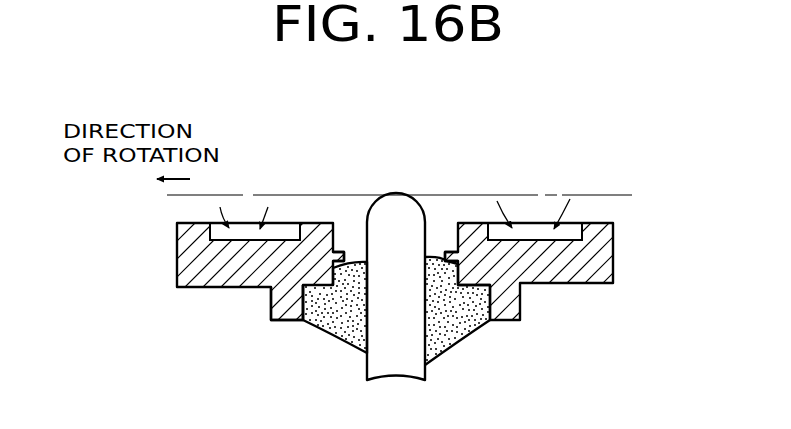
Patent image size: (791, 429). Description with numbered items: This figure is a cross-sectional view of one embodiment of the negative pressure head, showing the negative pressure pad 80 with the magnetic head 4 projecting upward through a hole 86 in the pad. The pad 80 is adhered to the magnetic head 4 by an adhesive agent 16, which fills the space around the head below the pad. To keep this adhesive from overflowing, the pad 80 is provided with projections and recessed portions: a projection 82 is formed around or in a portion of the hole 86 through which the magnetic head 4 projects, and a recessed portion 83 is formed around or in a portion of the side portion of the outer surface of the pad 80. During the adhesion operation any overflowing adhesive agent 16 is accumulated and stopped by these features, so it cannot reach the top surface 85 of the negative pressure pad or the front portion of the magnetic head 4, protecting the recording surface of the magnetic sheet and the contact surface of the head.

The magnetic head 4 is at (405, 196).
The adhesive agent 16 is at (463, 335).
The negative pressure pad 80 is at (320, 227).
The projection 82 is at (347, 228).
The recessed portion 83 is at (266, 304).
The top surface of the negative pressure pad 85 is at (240, 227).
The hole 86 is at (443, 227).